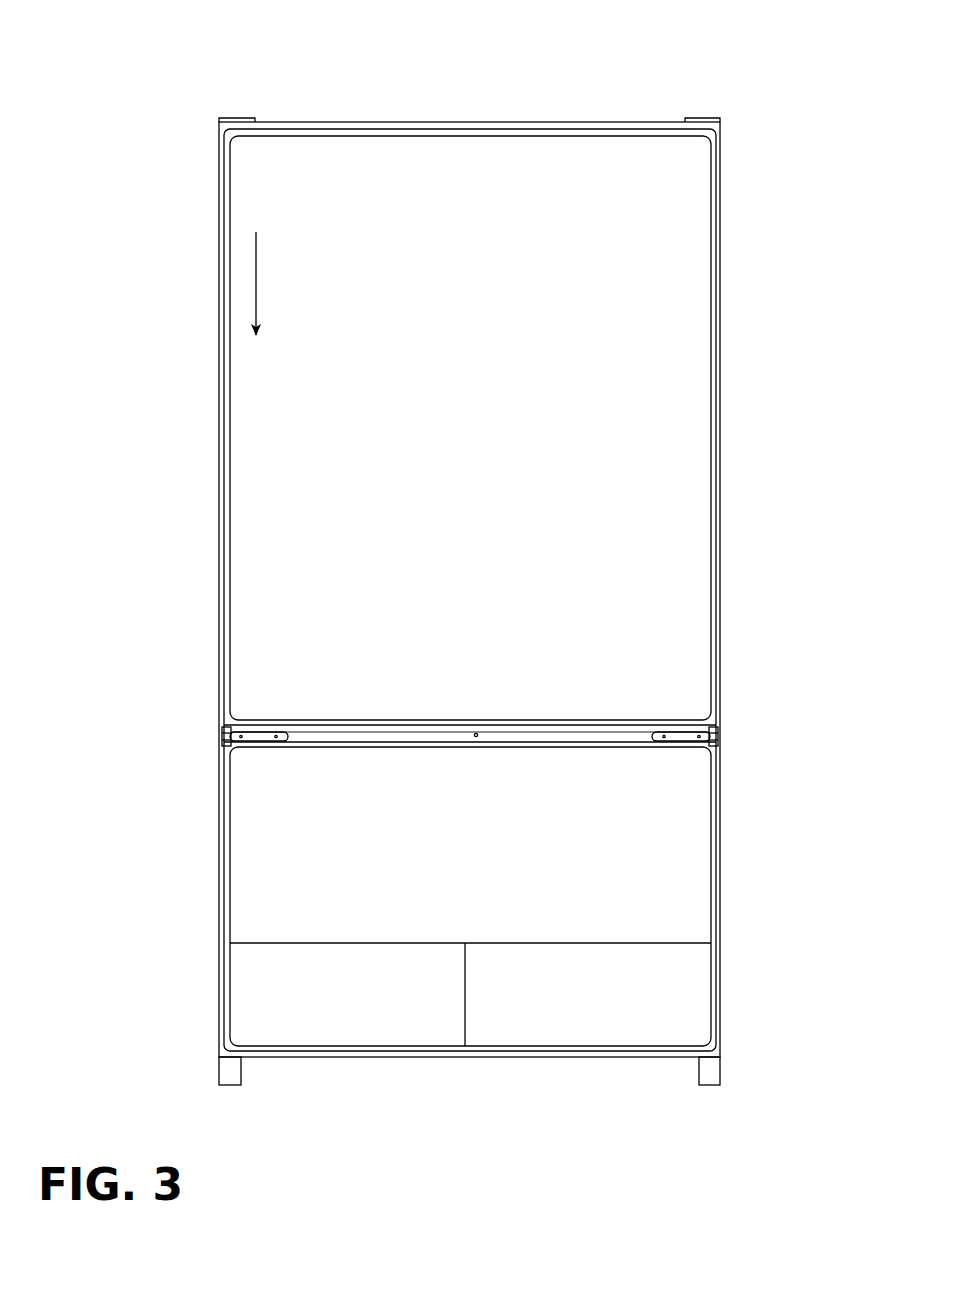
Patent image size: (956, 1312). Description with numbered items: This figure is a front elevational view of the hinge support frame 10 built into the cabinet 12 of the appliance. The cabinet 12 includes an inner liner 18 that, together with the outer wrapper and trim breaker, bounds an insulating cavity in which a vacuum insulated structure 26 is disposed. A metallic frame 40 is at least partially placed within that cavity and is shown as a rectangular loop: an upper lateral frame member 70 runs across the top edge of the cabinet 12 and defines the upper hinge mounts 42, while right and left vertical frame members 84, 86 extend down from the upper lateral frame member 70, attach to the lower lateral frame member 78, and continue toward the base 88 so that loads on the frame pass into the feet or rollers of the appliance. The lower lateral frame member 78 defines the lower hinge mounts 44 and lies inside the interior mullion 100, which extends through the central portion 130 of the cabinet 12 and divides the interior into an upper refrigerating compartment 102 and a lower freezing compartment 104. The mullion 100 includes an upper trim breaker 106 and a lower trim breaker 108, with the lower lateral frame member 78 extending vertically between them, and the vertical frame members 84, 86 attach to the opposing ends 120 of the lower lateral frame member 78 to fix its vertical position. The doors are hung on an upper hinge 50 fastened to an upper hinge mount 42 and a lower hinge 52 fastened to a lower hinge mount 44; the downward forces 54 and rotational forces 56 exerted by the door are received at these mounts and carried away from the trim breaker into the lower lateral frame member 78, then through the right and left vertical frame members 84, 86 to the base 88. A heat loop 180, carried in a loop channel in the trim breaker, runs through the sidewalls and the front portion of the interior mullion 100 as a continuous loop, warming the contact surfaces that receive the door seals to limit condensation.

The hinge support frame 10 is at (742, 300).
The cabinet 12 is at (217, 370).
The inner liner 18 is at (270, 507).
The vacuum insulated structure 26 is at (215, 578).
The metallic frame 40 is at (214, 257).
The upper hinge mount 42 is at (692, 138).
The lower hinge mount 44 is at (290, 717).
The upper hinge 50 is at (243, 118).
The lower hinge 52 is at (256, 735).
The downward forces 54 is at (258, 288).
The rotational forces 56 is at (198, 72).
The upper lateral frame member 70 is at (428, 120).
The lower lateral frame member 78 is at (476, 733).
The right vertical frame member 84 is at (723, 400).
The left vertical frame member 86 is at (222, 440).
The base 88 is at (724, 1072).
The interior mullion 100 is at (633, 710).
The upper refrigerating compartment 102 is at (622, 520).
The lower freezing compartment 104 is at (660, 862).
The upper trim breaker 106 is at (495, 722).
The lower trim breaker 108 is at (460, 748).
The opposing ends 120 is at (219, 730).
The central portion 130 is at (208, 760).
The heat loop 180 is at (493, 748).